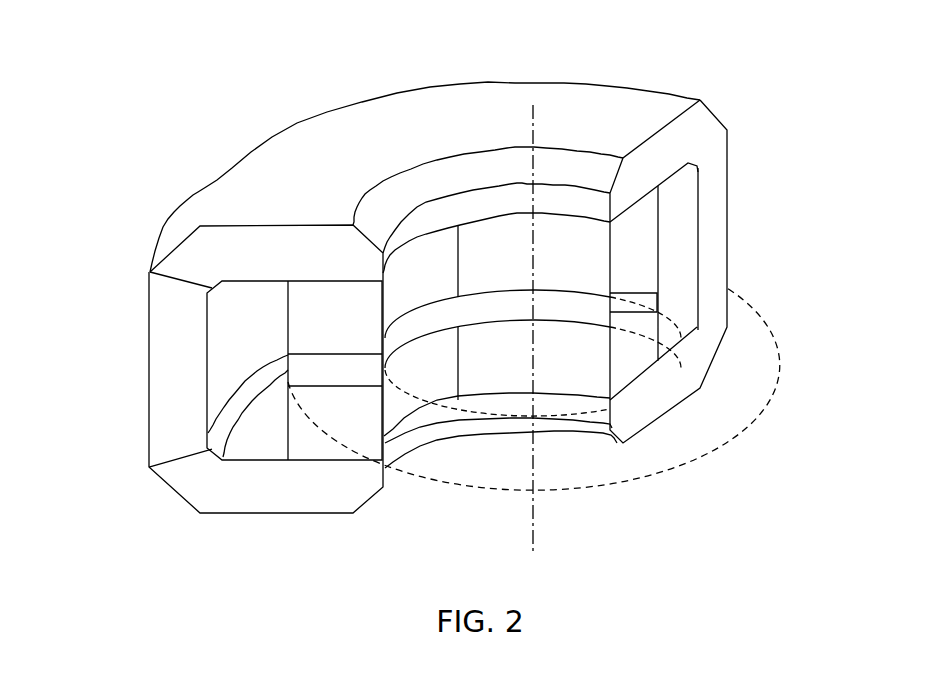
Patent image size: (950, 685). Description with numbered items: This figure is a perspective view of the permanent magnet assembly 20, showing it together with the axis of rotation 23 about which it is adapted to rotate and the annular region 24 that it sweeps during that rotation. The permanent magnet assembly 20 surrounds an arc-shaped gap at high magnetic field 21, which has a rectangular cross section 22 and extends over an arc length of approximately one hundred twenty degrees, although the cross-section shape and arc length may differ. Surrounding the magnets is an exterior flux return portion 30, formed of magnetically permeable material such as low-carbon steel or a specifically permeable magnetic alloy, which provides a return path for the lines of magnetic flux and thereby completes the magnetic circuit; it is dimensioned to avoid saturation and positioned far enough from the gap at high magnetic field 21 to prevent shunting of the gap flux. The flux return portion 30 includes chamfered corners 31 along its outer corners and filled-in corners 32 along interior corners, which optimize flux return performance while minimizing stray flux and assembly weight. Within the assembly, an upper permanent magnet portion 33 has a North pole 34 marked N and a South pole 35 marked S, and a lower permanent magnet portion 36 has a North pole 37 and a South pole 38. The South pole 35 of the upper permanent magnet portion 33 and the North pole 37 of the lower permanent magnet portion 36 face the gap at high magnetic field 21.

The permanent magnet assembly 20 is at (150, 95).
The gap at high magnetic field 21 is at (467, 300).
The rectangular cross section 22 is at (330, 373).
The axis of rotation 23 is at (533, 128).
The annular region 24 is at (717, 437).
The flux return portion 30 is at (180, 307).
The chamfered corners 31 is at (180, 223).
The filled-in corners 32 is at (166, 264).
The upper permanent magnet portion 33 is at (488, 248).
The North pole 34 is at (328, 278).
The South pole 35 is at (323, 343).
The lower permanent magnet portion 36 is at (477, 377).
The North pole 37 is at (327, 400).
The South pole 38 is at (327, 458).